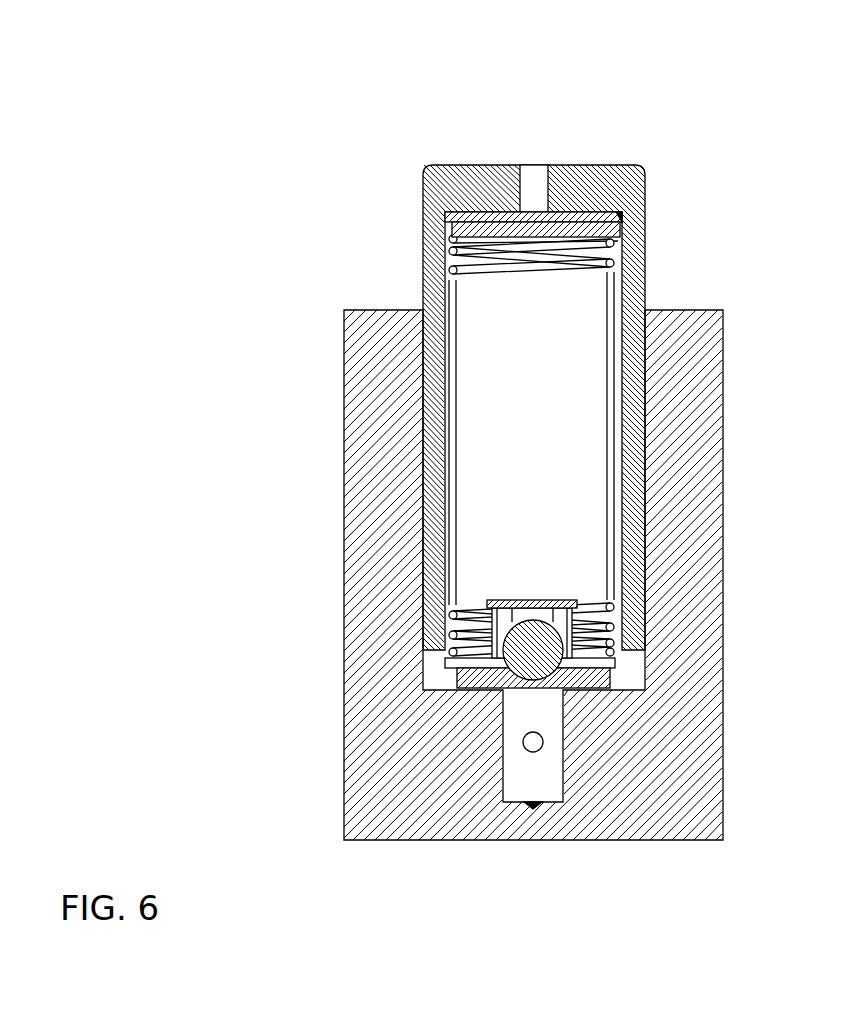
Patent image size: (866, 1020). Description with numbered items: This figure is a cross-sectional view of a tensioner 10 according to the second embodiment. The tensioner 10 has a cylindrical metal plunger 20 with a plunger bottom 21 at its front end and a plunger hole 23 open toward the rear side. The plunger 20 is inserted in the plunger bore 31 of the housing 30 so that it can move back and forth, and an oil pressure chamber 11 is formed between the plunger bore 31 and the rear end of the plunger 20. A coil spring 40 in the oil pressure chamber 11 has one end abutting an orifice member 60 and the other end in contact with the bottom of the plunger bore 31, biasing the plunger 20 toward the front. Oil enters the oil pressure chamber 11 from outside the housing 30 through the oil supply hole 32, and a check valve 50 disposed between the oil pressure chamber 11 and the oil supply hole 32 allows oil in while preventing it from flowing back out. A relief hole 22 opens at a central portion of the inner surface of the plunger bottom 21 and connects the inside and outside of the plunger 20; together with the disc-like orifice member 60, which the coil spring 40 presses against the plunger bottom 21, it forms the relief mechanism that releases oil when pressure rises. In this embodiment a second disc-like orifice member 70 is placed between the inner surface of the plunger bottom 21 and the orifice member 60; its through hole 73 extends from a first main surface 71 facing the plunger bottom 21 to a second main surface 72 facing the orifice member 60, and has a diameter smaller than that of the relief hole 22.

The tensioner 10 is at (216, 100).
The oil pressure chamber 11 is at (520, 437).
The plunger 20 is at (645, 213).
The plunger bottom 21 is at (593, 185).
The relief hole 22 is at (533, 185).
The plunger hole 23 is at (622, 283).
The housing 30 is at (723, 534).
The plunger bore 31 is at (642, 668).
The oil supply hole 32 is at (537, 750).
The coil spring 40 is at (445, 652).
The check valve 50 is at (494, 599).
The orifice member 60 is at (447, 222).
The second orifice member 70 is at (424, 195).
The first main surface 71 is at (605, 211).
The second main surface 72 is at (622, 240).
The through hole 73 is at (470, 167).